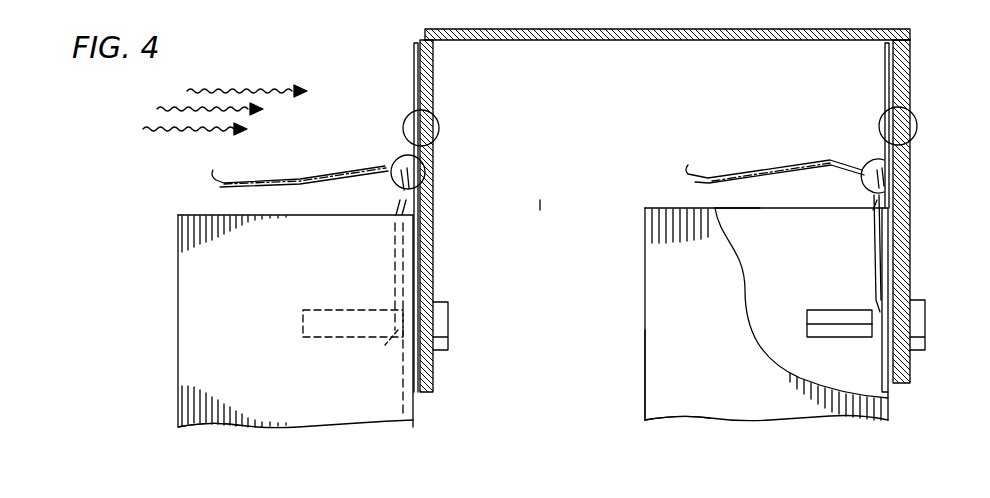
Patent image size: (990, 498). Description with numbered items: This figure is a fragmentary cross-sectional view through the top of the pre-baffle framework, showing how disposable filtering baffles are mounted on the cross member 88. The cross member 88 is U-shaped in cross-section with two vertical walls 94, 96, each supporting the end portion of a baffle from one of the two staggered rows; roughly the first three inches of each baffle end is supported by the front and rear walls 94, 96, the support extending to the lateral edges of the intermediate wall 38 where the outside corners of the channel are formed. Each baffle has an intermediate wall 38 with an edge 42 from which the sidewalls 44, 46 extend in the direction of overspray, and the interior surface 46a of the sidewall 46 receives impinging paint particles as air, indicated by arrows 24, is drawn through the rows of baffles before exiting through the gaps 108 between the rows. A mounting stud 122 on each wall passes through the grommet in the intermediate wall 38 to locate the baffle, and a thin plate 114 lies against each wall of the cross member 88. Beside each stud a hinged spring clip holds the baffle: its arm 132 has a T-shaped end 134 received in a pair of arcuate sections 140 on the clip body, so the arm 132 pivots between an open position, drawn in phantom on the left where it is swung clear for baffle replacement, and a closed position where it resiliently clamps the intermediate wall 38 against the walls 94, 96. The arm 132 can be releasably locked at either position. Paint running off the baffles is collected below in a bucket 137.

The arrows 24 is at (187, 128).
The intermediate wall 38 is at (905, 393).
The edge 42 is at (413, 418).
The sidewall 44 is at (762, 218).
The sidewall 46 is at (178, 372).
The interior surface 46a is at (662, 365).
The cross member 88 is at (683, 29).
The vertical wall 94 is at (434, 76).
The vertical wall 96 is at (905, 207).
The gaps 108 is at (533, 222).
The plate 114 is at (413, 60).
The mounting stud 122 is at (348, 325).
The arm 132 is at (394, 248).
The T-shaped end 134 is at (416, 176).
The bucket 137 is at (303, 162).
The arcuate sections 140 is at (392, 180).